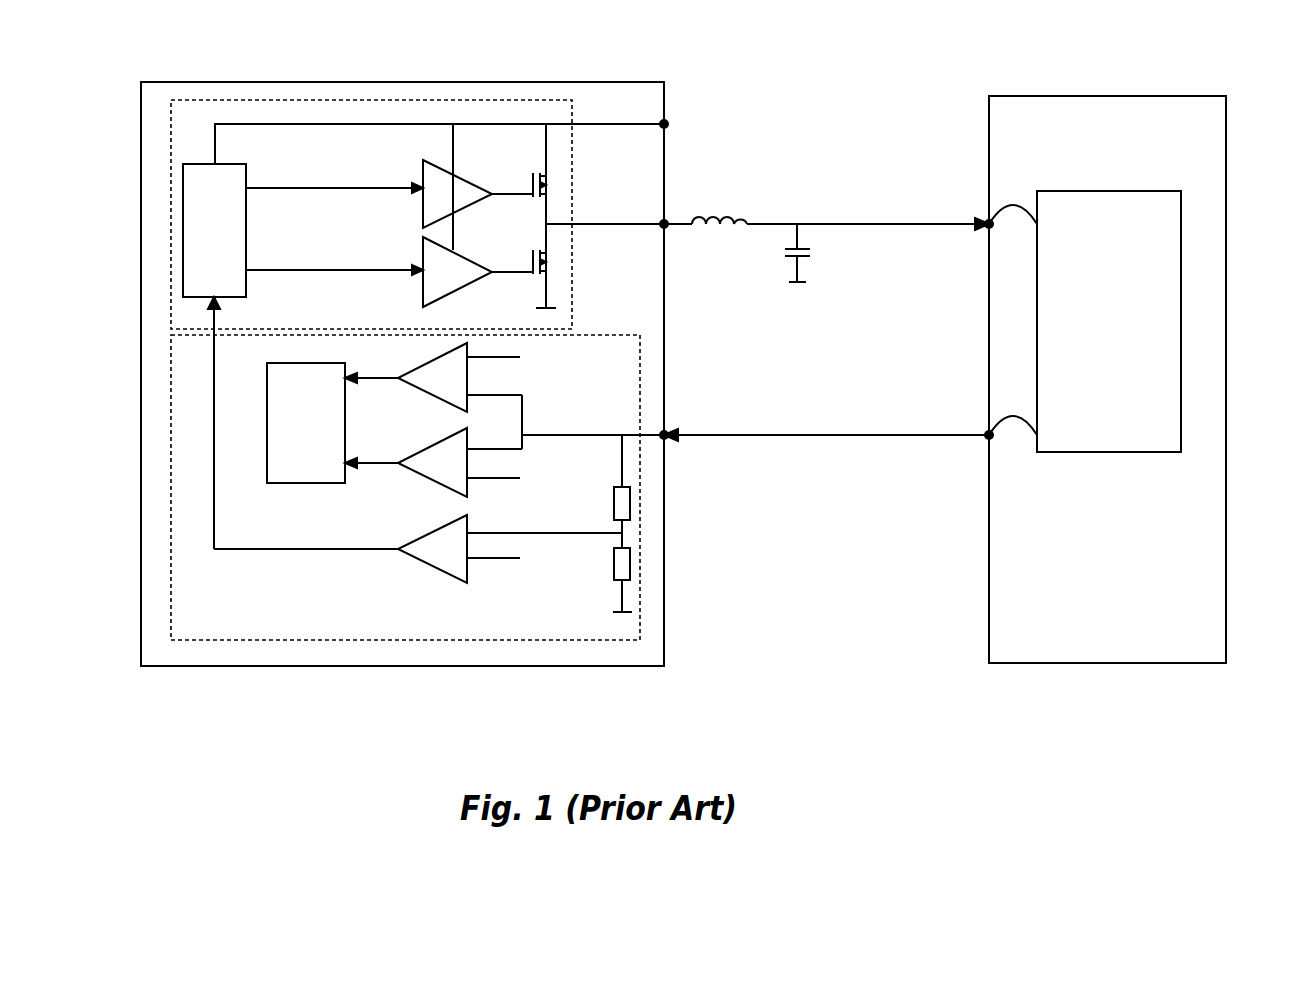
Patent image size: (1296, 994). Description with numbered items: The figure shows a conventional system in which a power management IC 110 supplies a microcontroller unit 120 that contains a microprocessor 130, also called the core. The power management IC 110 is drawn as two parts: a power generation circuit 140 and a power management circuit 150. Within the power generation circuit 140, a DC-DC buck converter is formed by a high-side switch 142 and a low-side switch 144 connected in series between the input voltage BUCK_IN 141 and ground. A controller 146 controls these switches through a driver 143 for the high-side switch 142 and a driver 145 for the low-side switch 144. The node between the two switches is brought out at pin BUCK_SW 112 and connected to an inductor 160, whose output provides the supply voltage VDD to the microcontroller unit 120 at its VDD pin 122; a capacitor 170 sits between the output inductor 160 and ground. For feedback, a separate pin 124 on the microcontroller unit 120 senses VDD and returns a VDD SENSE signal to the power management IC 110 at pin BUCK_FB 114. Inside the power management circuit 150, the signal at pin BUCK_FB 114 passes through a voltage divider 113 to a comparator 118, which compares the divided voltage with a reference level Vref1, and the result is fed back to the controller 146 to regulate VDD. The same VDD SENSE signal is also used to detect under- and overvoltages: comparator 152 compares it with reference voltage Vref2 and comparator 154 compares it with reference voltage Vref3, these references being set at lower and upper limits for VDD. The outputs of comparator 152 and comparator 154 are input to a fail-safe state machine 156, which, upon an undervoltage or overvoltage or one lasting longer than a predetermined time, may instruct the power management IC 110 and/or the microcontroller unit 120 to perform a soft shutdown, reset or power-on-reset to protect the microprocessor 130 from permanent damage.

The power management IC 110 is at (141, 100).
The microcontroller unit 120 is at (1226, 102).
The microprocessor 130 is at (1181, 282).
The power generation circuit 140 is at (171, 232).
The power management circuit 150 is at (171, 413).
The controller 146 is at (423, 336).
The driver 143 is at (478, 194).
The driver 145 is at (478, 272).
The high-side switch 142 is at (553, 177).
The low-side switch 144 is at (548, 259).
The input voltage BUCK_IN 141 is at (666, 122).
The pin BUCK_SW 112 is at (667, 228).
The inductor 160 is at (738, 212).
The capacitor 170 is at (806, 258).
The VDD pin 122 is at (988, 218).
The pin 124 is at (989, 443).
The pin BUCK_FB 114 is at (667, 440).
The feedback resistor divider 113 is at (669, 480).
The comparator 154 is at (433, 395).
The comparator 152 is at (433, 464).
The comparator 118 is at (367, 549).
The fail-safe state machine 156 is at (306, 423).